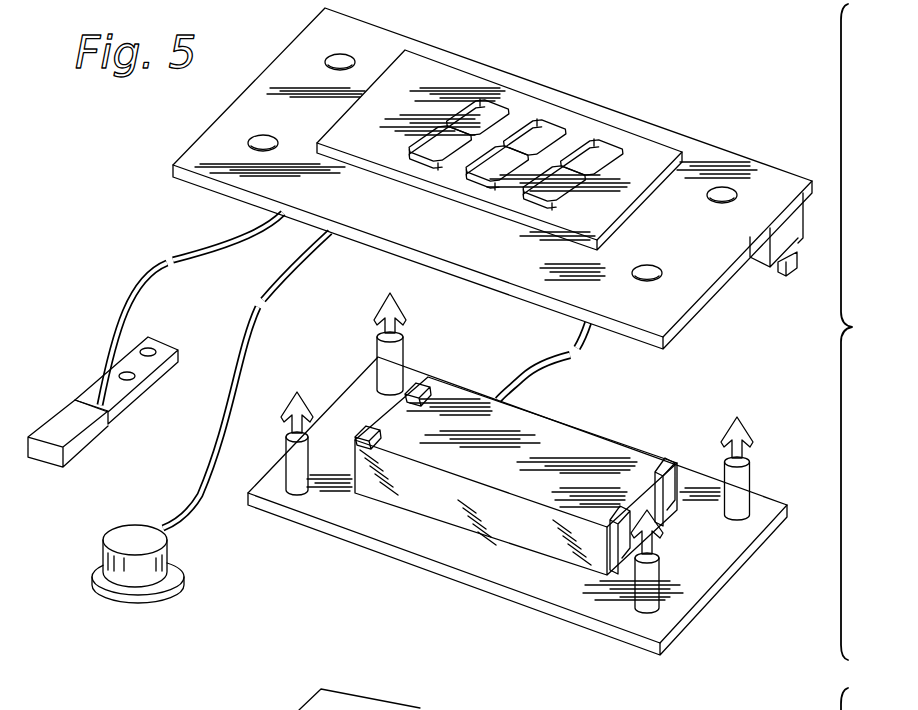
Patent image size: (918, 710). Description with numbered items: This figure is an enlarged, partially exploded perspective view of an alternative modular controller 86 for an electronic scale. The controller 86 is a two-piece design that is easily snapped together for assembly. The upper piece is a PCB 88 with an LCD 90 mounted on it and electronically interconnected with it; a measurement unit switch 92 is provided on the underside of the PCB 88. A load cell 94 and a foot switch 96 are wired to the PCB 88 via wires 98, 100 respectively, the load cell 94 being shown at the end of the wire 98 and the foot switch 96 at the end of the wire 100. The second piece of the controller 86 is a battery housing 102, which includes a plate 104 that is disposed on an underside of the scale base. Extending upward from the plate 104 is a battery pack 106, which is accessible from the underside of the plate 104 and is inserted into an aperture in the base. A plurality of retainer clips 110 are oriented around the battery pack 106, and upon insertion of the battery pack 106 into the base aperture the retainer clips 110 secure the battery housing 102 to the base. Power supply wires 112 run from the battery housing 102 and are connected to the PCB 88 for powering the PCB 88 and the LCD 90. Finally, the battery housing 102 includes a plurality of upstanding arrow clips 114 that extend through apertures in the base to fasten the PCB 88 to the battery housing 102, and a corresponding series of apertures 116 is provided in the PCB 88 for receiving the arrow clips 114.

The modular controller 86 is at (862, 332).
The PCB 88 is at (633, 113).
The LCD 90 is at (538, 95).
The measurement unit switch 92 is at (787, 240).
The load cell 94 is at (73, 400).
The foot switch 96 is at (140, 602).
The wire 98 is at (237, 240).
The wire 100 is at (307, 258).
The battery housing 102 is at (293, 531).
The plate 104 is at (618, 637).
The battery pack 106 is at (547, 558).
The retainer clips 110 is at (600, 572).
The power supply wires 112 is at (560, 368).
The arrow clips 114 is at (739, 416).
The apertures 116 is at (723, 190).